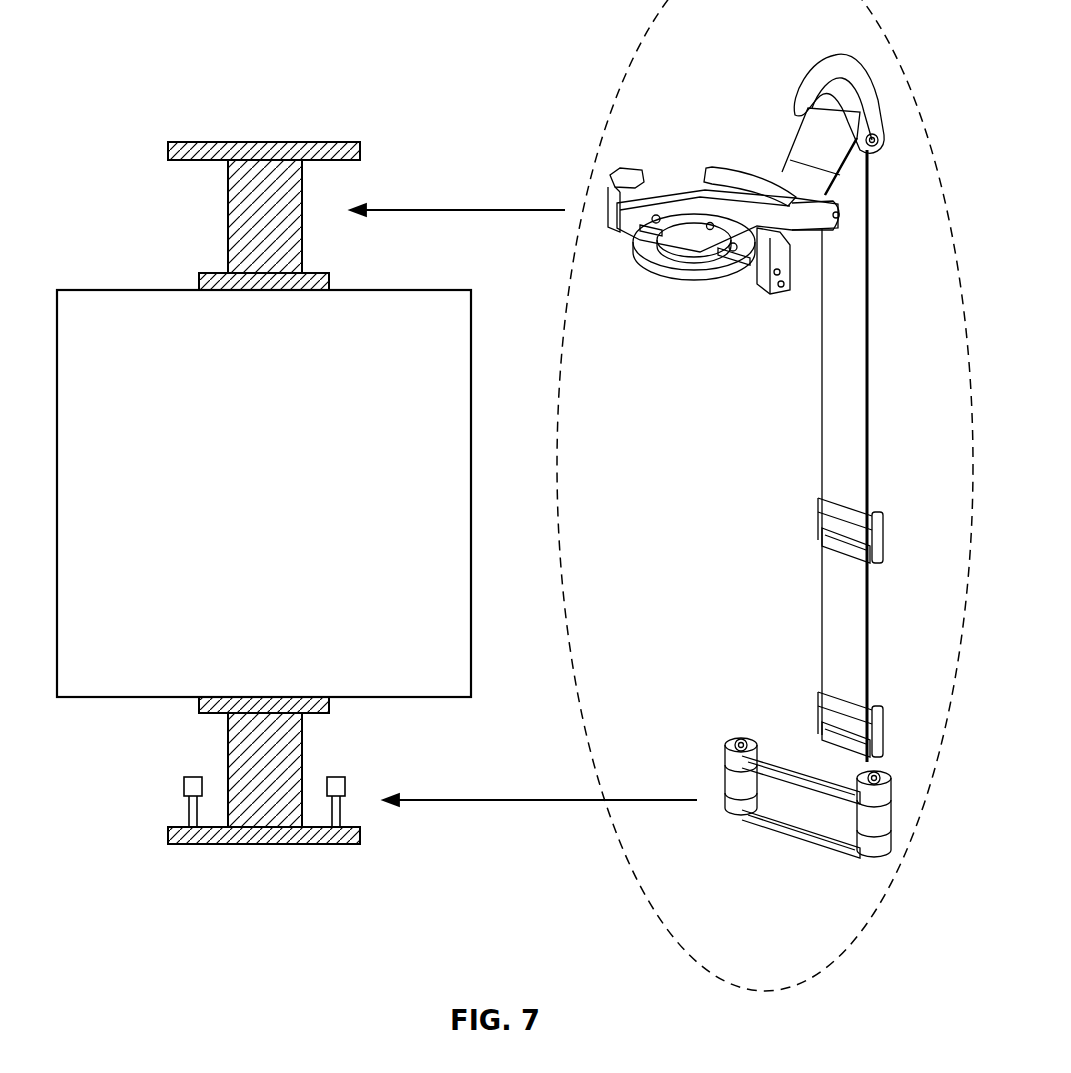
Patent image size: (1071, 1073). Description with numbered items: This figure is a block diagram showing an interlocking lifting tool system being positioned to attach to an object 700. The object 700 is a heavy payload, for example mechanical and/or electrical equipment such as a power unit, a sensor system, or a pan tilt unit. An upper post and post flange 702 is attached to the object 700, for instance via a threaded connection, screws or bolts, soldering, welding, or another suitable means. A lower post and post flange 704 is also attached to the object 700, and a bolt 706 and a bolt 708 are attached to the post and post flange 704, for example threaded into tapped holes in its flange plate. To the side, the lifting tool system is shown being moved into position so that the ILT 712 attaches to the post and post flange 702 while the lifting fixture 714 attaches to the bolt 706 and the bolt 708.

The object 700 is at (471, 660).
The post and post flange 702 is at (228, 220).
The post and post flange 704 is at (272, 845).
The bolt 706 is at (184, 787).
The bolt 708 is at (345, 787).
The ILT 712 is at (672, 270).
The lifting fixture 714 is at (796, 826).